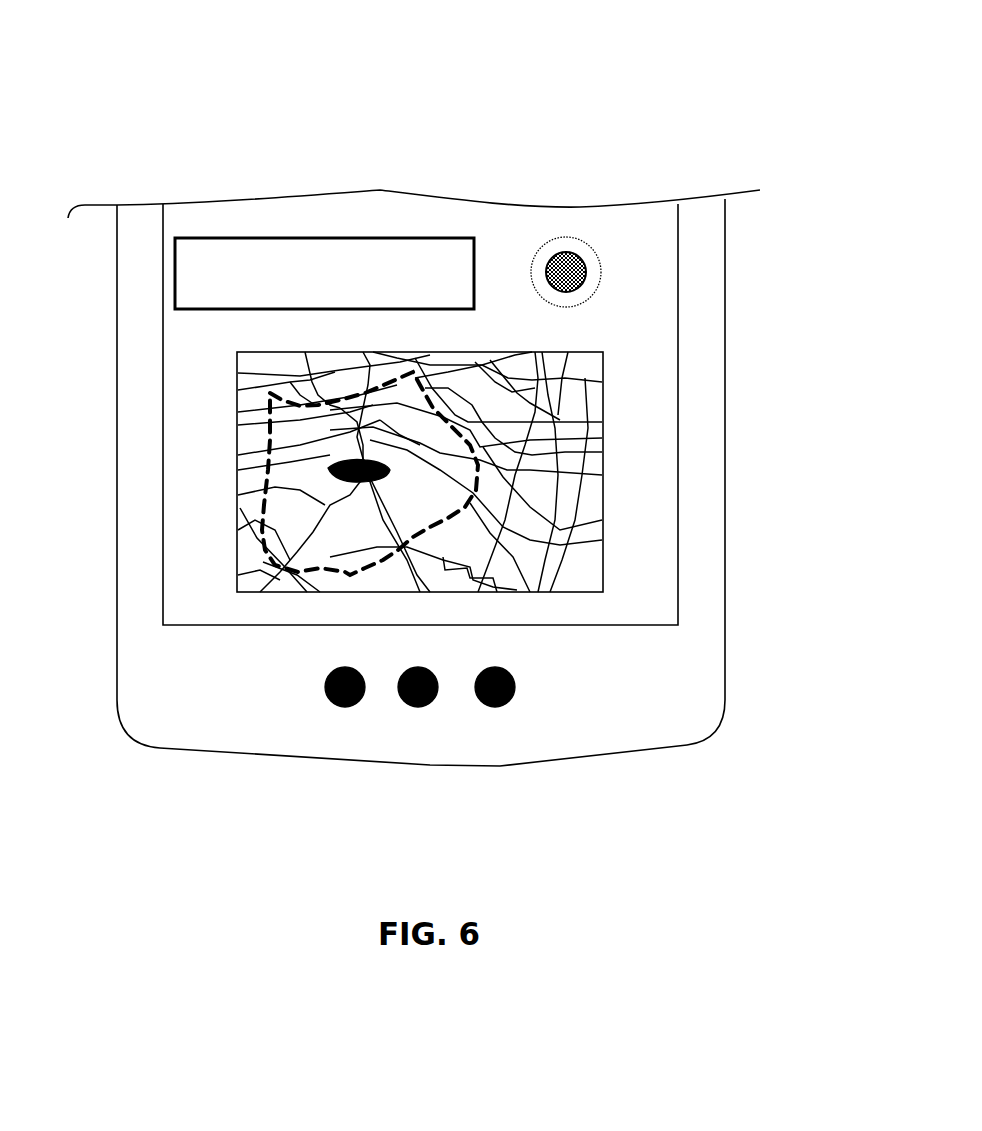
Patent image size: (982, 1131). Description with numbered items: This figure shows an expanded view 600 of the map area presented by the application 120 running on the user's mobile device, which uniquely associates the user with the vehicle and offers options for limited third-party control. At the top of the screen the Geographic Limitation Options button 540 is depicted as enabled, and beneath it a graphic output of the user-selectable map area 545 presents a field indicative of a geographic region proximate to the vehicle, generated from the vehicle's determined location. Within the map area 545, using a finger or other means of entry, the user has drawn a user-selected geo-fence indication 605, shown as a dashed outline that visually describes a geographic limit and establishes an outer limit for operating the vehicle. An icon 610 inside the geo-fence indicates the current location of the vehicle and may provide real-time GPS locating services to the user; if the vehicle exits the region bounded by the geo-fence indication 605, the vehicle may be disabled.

The expanded view 600 is at (800, 80).
The application 120 is at (117, 302).
The Geographic Limitations Options button 540 is at (602, 270).
The user-selectable map area 545 is at (605, 437).
The user-selected geo-fence indication 605 is at (266, 503).
The icon 610 is at (328, 470).